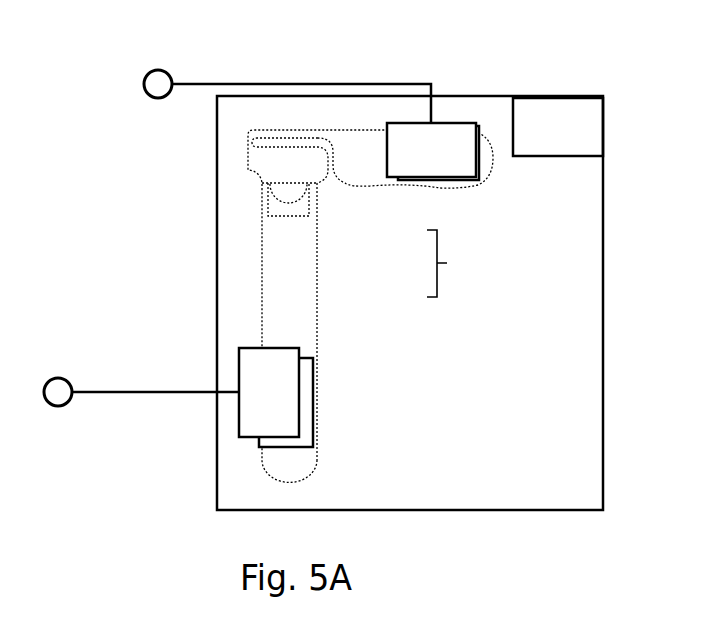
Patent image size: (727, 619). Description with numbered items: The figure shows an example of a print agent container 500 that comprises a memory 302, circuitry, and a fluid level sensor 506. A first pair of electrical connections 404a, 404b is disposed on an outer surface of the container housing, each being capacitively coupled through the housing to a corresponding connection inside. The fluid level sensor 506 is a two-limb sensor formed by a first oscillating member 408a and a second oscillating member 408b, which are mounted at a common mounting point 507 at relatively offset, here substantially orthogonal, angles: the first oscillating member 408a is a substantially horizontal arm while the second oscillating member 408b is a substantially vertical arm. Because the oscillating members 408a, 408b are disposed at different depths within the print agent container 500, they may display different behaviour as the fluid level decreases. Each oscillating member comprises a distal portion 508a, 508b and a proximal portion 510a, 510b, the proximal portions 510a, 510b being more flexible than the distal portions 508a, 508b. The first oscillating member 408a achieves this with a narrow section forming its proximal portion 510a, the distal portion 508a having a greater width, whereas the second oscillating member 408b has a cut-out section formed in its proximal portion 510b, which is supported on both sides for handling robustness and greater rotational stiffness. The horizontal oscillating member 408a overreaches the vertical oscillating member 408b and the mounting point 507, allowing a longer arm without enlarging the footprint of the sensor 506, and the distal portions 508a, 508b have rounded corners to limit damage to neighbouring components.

The print agent container 500 is at (110, 40).
The memory 302 is at (573, 138).
The first electrical connection 404a is at (450, 123).
The first electrical connection 404b is at (239, 407).
The first oscillating member 408a is at (368, 185).
The second oscillating member 408b is at (315, 337).
The fluid level sensor 506 is at (462, 263).
The common mounting point 507 is at (277, 170).
The distal portion 508a is at (467, 182).
The distal portion 508b is at (315, 443).
The proximal portion 510a is at (287, 128).
The proximal portion 510b is at (262, 190).